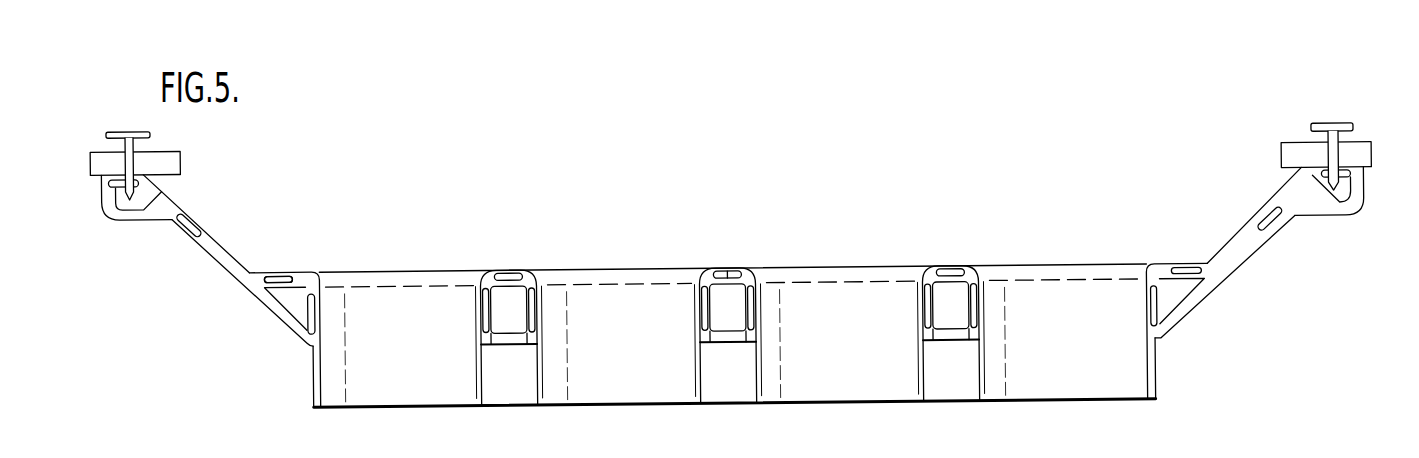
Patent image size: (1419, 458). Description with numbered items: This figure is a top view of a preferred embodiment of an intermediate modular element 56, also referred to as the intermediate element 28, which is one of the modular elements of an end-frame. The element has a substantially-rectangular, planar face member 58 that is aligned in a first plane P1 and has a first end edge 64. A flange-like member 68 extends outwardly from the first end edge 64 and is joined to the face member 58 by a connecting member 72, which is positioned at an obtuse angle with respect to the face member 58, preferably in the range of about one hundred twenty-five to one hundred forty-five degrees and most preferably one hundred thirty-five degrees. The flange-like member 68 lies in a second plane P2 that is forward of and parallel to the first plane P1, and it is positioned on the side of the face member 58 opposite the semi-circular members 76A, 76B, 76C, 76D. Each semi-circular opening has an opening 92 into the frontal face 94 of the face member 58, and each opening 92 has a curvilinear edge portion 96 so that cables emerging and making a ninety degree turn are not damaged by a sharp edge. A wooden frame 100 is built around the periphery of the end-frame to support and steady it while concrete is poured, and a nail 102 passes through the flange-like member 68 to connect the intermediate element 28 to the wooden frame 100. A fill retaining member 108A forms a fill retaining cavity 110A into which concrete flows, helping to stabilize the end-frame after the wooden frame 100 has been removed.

The intermediate element 28 is at (418, 244).
The intermediate modular element 56 is at (1183, 368).
The face member 58 is at (460, 268).
The first end edge 64 is at (1207, 265).
The flange-like member 68 is at (1370, 183).
The connecting member 72 is at (1242, 236).
The semi-circular member 76A is at (1058, 363).
The semi-circular member 76B is at (842, 369).
The semi-circular member 76C is at (615, 369).
The semi-circular member 76D is at (388, 372).
The opening 92 is at (1060, 265).
The frontal face 94 is at (940, 264).
The curvilinear edge portion 96 is at (980, 265).
The wooden frame 100 is at (1276, 152).
The nail 102 is at (1334, 128).
The fill retaining member 108A is at (952, 347).
The fill retaining cavity 110A is at (953, 305).
The first plane P1 is at (727, 262).
The second plane P2 is at (1297, 178).